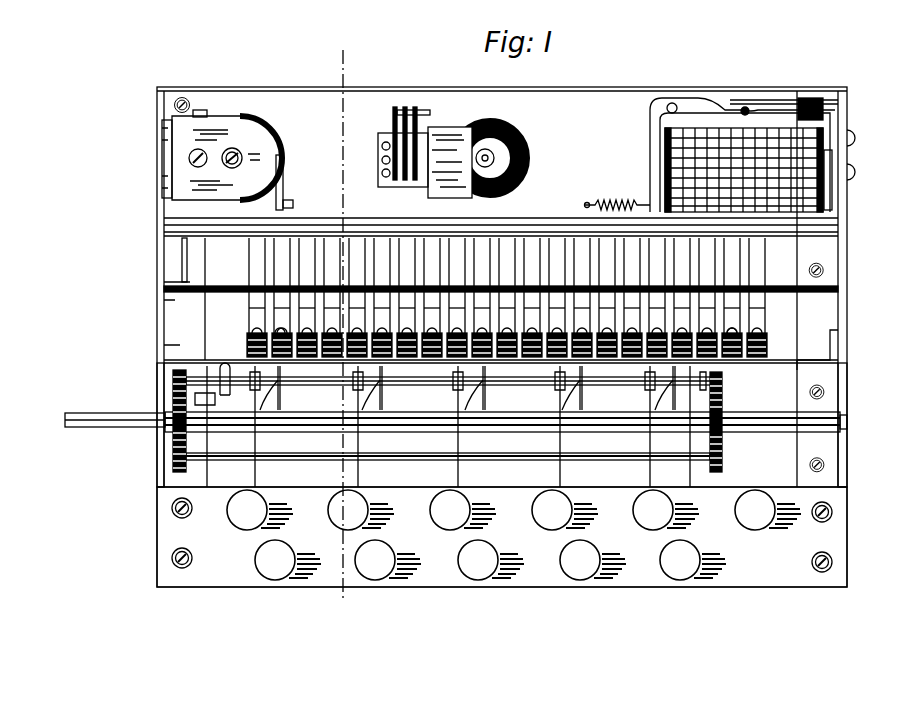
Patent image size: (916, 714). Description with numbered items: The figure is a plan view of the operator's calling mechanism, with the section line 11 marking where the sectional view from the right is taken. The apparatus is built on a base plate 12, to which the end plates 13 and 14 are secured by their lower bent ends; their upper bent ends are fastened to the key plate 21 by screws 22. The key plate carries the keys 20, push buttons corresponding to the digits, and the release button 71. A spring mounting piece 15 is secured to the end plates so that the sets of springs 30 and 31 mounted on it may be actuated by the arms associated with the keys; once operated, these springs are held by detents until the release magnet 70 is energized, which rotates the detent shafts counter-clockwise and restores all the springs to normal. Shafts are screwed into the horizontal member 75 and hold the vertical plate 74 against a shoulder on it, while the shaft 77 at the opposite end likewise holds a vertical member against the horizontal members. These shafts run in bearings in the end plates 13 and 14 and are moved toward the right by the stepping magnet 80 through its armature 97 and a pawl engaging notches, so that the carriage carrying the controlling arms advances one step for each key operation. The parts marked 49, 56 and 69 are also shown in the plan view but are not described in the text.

The section line 11 is at (355, 325).
The base plate 12 is at (596, 95).
The end plate 13 is at (160, 460).
The end plate 14 is at (848, 468).
The spring mounting piece 15 is at (790, 365).
The keys 20 is at (258, 512).
The key plate 21 is at (228, 580).
The screws 22 is at (172, 508).
The set of springs 30 is at (248, 345).
The set of springs 31 is at (272, 330).
The stop 49 is at (735, 335).
The bearing bracket 56 is at (655, 392).
The stop member 69 is at (762, 352).
The release magnet 70 is at (255, 120).
The release key 71 is at (755, 520).
The vertical plate 74 is at (175, 452).
The horizontal member 75 is at (690, 432).
The shaft 77 is at (818, 425).
The stepping magnet 80 is at (680, 148).
The armature 97 is at (652, 188).